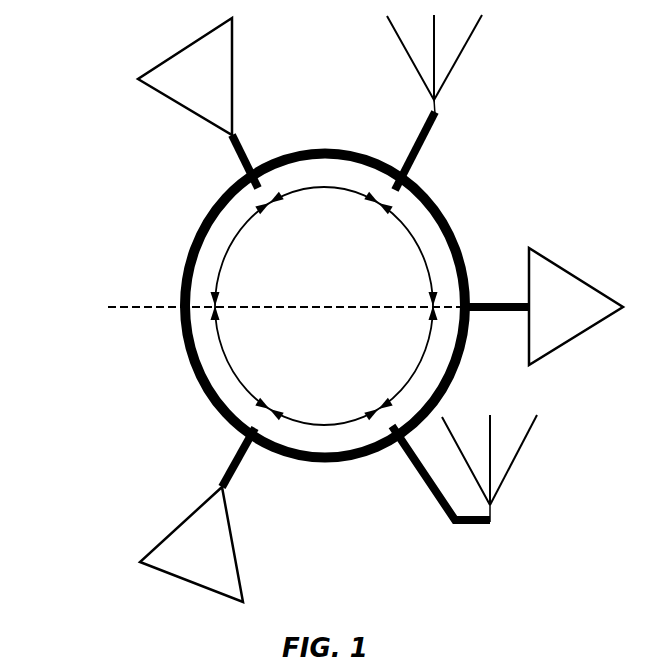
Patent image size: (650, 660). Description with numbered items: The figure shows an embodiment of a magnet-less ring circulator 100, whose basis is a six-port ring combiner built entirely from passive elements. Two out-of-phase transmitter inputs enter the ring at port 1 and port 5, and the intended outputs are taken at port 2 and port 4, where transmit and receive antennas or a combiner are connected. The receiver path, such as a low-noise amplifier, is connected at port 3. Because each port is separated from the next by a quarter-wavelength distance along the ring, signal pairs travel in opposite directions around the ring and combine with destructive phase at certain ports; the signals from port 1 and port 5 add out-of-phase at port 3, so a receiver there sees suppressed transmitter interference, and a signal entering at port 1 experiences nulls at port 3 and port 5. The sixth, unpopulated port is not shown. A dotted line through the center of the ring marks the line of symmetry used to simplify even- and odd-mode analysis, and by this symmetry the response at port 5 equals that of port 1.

The magnet-less ring circulator 100 is at (80, 108).
The port 1 is at (198, 103).
The port 2 is at (434, 102).
The port 3 is at (542, 306).
The port 4 is at (466, 468).
The port 5 is at (197, 515).